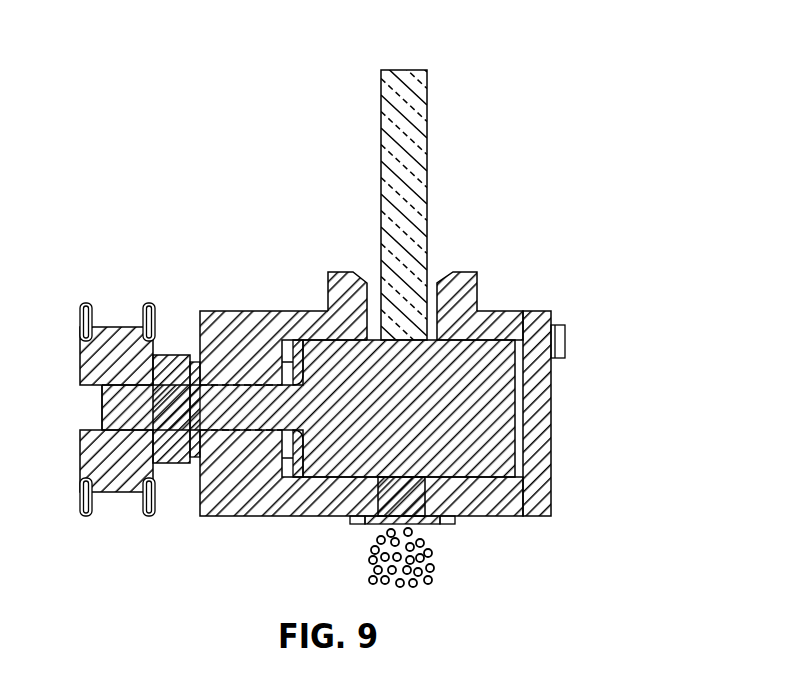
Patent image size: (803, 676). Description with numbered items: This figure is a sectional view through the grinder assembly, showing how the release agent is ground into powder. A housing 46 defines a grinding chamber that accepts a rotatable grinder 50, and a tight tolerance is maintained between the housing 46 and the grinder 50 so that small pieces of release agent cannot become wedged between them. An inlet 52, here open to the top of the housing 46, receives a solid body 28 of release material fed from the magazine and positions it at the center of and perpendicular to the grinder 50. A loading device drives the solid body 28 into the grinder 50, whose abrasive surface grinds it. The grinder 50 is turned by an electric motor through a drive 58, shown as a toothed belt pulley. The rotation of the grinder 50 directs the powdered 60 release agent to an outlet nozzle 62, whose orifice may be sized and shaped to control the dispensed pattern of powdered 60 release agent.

The solid body 28 is at (427, 107).
The housing 46 is at (263, 311).
The grinder 50 is at (473, 407).
The inlet 52 is at (437, 271).
The drive 58 is at (78, 352).
The powdered release agent 60 is at (450, 559).
The outlet nozzle 62 is at (377, 522).